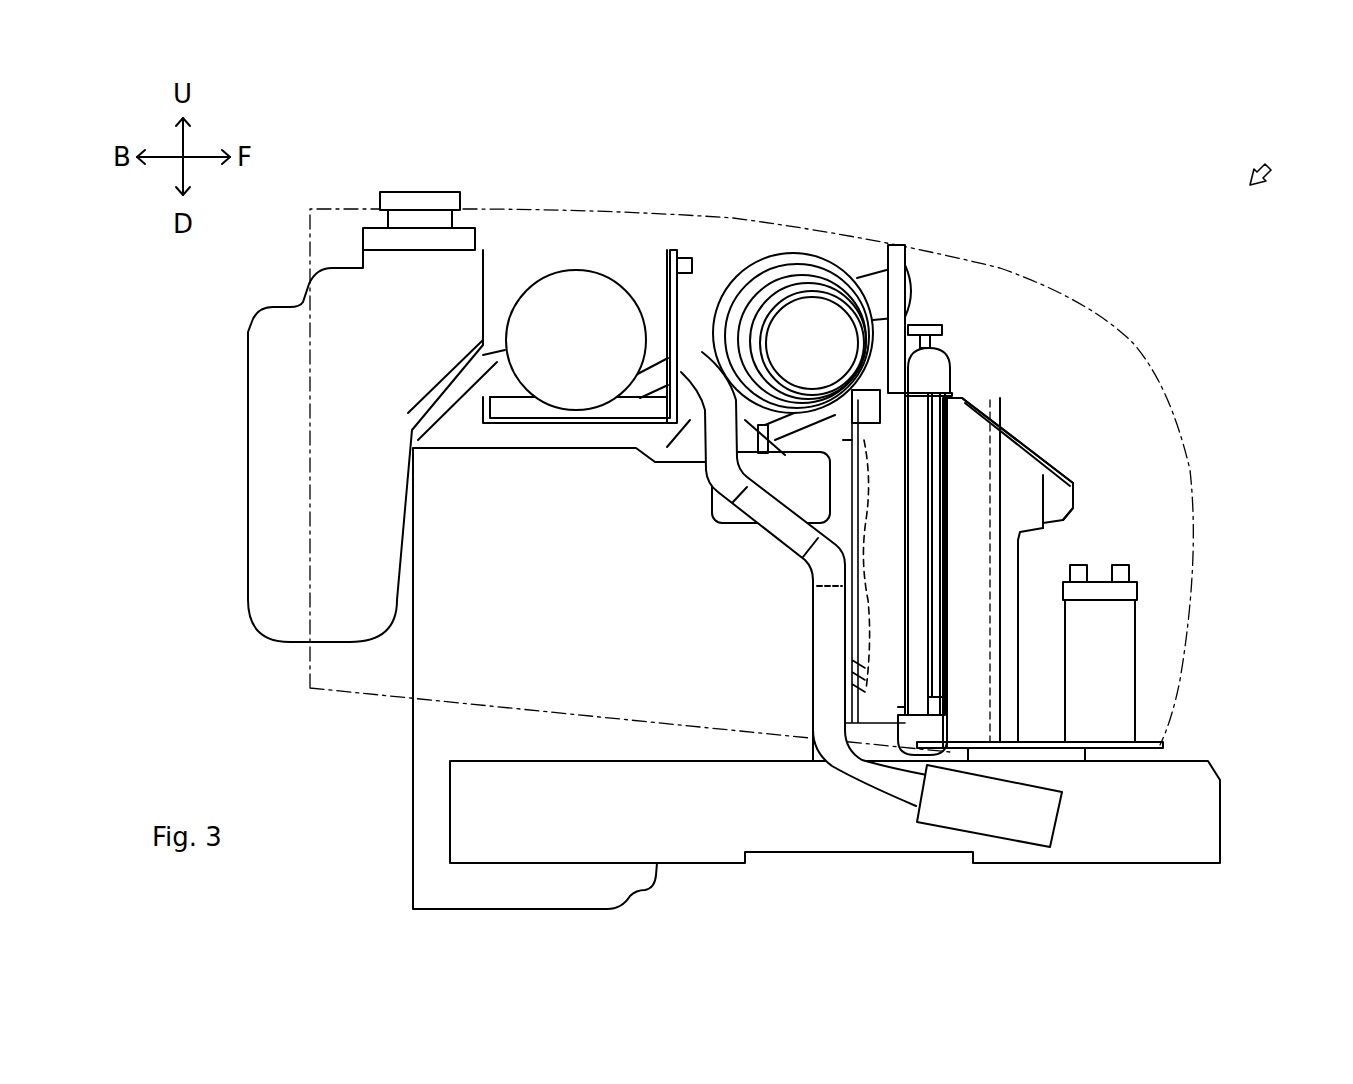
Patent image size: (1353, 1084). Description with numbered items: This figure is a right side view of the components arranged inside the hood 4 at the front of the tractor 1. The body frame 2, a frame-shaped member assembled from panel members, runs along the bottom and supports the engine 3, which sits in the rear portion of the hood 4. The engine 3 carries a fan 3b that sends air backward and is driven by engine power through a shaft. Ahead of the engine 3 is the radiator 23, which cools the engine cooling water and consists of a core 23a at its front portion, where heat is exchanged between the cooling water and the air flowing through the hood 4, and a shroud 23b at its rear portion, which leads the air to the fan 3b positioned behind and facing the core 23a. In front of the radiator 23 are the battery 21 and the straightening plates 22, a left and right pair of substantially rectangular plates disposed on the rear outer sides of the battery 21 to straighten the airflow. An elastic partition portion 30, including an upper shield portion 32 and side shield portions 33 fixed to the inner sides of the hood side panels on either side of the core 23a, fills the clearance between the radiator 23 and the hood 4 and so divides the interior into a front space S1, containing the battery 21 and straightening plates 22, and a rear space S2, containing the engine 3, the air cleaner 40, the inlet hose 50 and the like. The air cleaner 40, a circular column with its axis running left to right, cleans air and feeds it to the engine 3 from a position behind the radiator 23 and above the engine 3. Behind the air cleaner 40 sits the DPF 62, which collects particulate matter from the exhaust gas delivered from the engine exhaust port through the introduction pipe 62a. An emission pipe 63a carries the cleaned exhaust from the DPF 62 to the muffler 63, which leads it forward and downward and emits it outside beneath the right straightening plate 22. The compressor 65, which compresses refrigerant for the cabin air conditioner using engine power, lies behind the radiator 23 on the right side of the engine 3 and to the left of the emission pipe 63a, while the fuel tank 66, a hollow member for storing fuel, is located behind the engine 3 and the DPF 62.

The tractor 1 is at (1271, 156).
The body frame 2 is at (1100, 843).
The engine 3 is at (425, 745).
The fan 3b is at (838, 695).
The hood 4 is at (1038, 274).
The battery 21 is at (1120, 655).
The straightening plates 22 is at (1056, 507).
The radiator 23 is at (943, 448).
The core 23a is at (937, 433).
The shroud 23b is at (880, 697).
The partition portion 30 is at (900, 242).
The upper shield portion 32 is at (905, 262).
The side shield portions 33 is at (920, 653).
The air cleaner 40 is at (780, 258).
The inlet hose 50 is at (920, 283).
The DPF 62 is at (573, 285).
The introduction pipe 62a is at (492, 350).
The muffler 63 is at (1022, 833).
The emission pipe 63a is at (718, 467).
The compressor 65 is at (725, 515).
The fuel tank 66 is at (248, 447).
The front space S1 is at (1070, 345).
The rear space S2 is at (706, 252).